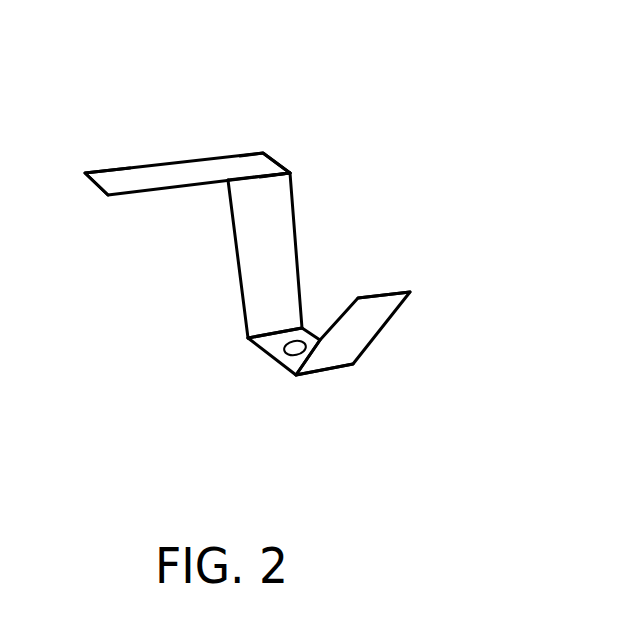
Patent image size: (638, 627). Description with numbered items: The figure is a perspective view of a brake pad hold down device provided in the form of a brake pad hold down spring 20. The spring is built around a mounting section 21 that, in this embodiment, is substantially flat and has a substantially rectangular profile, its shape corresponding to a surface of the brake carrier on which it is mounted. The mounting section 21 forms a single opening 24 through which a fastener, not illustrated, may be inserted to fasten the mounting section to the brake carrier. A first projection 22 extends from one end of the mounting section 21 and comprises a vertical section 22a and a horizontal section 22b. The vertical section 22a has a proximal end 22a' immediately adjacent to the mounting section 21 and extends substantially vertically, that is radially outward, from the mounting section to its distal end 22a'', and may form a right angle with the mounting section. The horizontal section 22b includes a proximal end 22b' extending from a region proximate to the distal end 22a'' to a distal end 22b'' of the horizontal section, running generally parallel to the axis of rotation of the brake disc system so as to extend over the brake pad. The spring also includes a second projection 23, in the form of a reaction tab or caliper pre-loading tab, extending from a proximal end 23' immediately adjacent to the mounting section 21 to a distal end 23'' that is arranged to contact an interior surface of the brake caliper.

The brake pad hold down spring 20 is at (440, 87).
The mounting section 21 is at (292, 376).
The first projection 22 is at (168, 263).
The vertical section 22a is at (256, 268).
The proximal end of the vertical section 22a' is at (224, 345).
The distal end of the vertical section 22a'' is at (211, 201).
The horizontal section 22b is at (211, 135).
The proximal end of the horizontal section 22b' is at (314, 160).
The distal end of the horizontal section 22b'' is at (82, 144).
The second projection 23 is at (392, 348).
The proximal end of the second projection 23' is at (342, 389).
The distal end of the second projection 23'' is at (423, 297).
The opening 24 is at (298, 346).